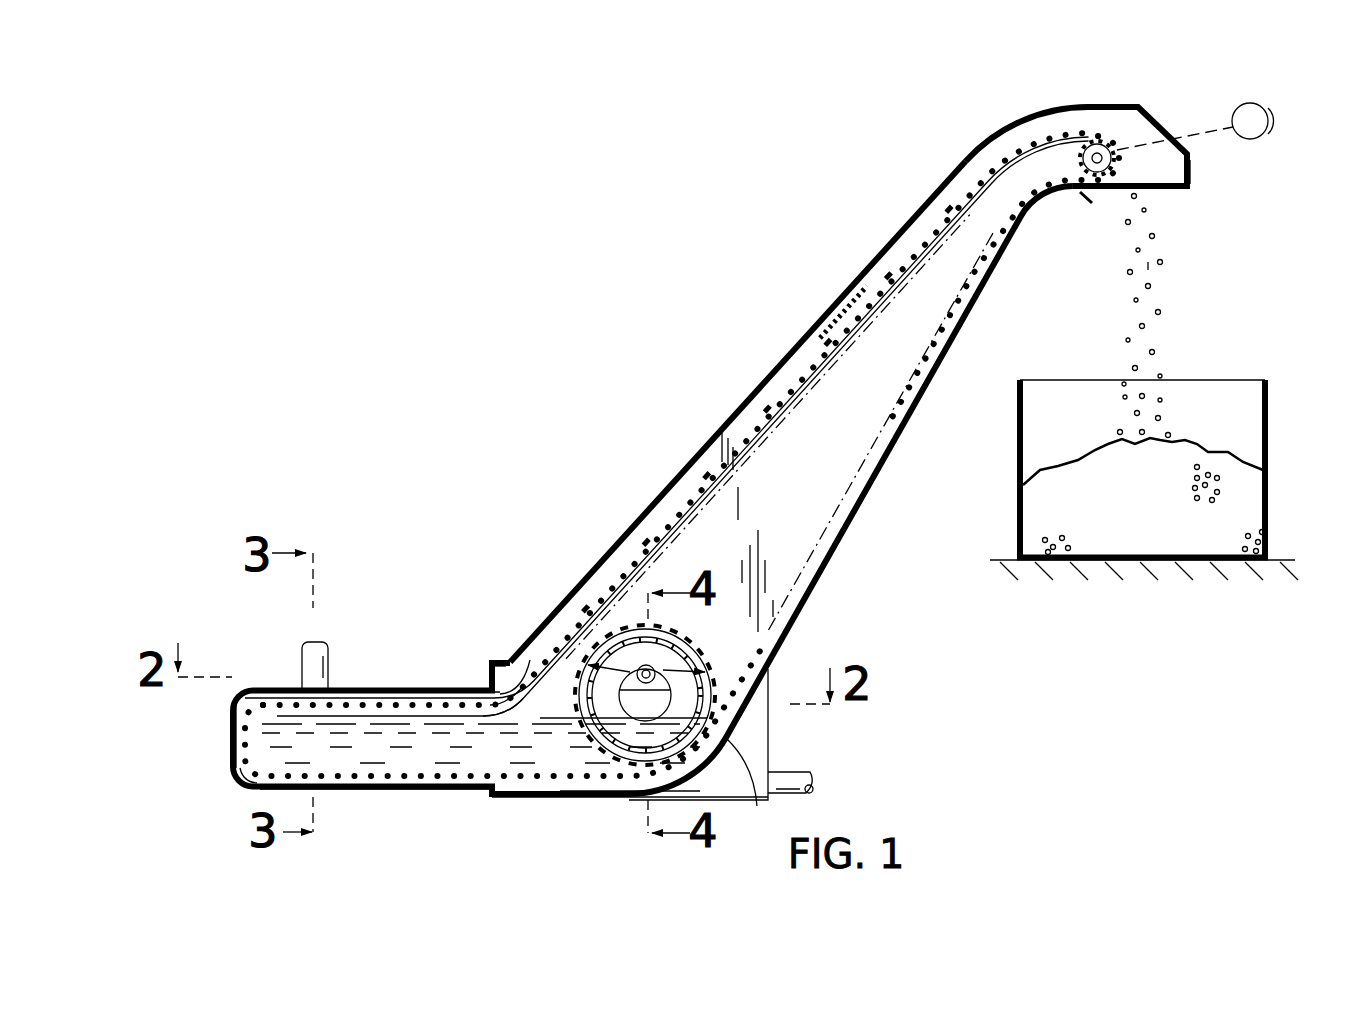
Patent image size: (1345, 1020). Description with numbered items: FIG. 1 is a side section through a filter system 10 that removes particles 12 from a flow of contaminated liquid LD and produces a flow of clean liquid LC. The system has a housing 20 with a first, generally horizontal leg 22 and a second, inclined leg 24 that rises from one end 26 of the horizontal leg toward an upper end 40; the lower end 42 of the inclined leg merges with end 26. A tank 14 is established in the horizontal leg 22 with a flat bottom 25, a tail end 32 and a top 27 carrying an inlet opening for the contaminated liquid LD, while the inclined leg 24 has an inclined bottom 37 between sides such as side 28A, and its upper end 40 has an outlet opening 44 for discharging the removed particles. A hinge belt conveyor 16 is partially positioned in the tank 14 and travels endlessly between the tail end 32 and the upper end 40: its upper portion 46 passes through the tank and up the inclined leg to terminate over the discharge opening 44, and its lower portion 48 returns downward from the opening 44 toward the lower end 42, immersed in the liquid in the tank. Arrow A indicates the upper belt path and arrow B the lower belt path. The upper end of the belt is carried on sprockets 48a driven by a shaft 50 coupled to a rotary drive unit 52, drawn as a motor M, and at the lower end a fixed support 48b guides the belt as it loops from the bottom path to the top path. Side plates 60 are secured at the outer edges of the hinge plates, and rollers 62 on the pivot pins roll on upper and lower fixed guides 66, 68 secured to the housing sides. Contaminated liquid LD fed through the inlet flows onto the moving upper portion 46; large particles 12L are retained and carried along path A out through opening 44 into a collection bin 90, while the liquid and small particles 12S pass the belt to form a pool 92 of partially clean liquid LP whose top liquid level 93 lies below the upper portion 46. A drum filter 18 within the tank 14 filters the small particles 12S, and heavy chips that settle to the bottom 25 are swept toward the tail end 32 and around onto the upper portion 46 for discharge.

The filter system 10 is at (652, 300).
The particles 12 is at (1043, 540).
The small particles 12S is at (1172, 330).
The large particles 12L is at (1128, 275).
The tank 14 is at (396, 722).
The hinge belt conveyor 16 is at (527, 676).
The drum filter 18 is at (598, 742).
The housing 20 is at (563, 593).
The first horizontal leg 22 is at (357, 685).
The second inclined leg 24 is at (735, 393).
The flat bottom 25 is at (398, 788).
The end of first leg 26 is at (640, 786).
The top 27 is at (443, 690).
The side of inclined leg 28A is at (838, 316).
The tail end 32 is at (232, 740).
The inclined bottom 37 is at (813, 590).
The upper end 40 is at (1100, 102).
The lower end 42 is at (701, 751).
The outlet opening 44 is at (1165, 187).
The upper portion of hinge belt 46 is at (470, 692).
The lower portion of hinge belt 48 is at (447, 777).
The sprockets 48a is at (1108, 150).
The fixed support 48b is at (240, 778).
The shaft 50 is at (1083, 195).
The rotary drive unit 52 is at (1260, 138).
The side plates 60 is at (828, 348).
The rollers 62 is at (792, 410).
The upper fixed guide 66 is at (370, 718).
The lower fixed guide 68 is at (483, 790).
The collection bin 90 is at (1270, 420).
The pool 92 is at (383, 755).
The top liquid level 93 is at (545, 662).
The upper belt path arrow A is at (777, 391).
The lower belt path arrow B is at (907, 368).
The contaminated liquid LD is at (316, 642).
The clean liquid LC is at (818, 777).
The partially clean liquid LP is at (428, 754).
The motor M is at (1192, 126).